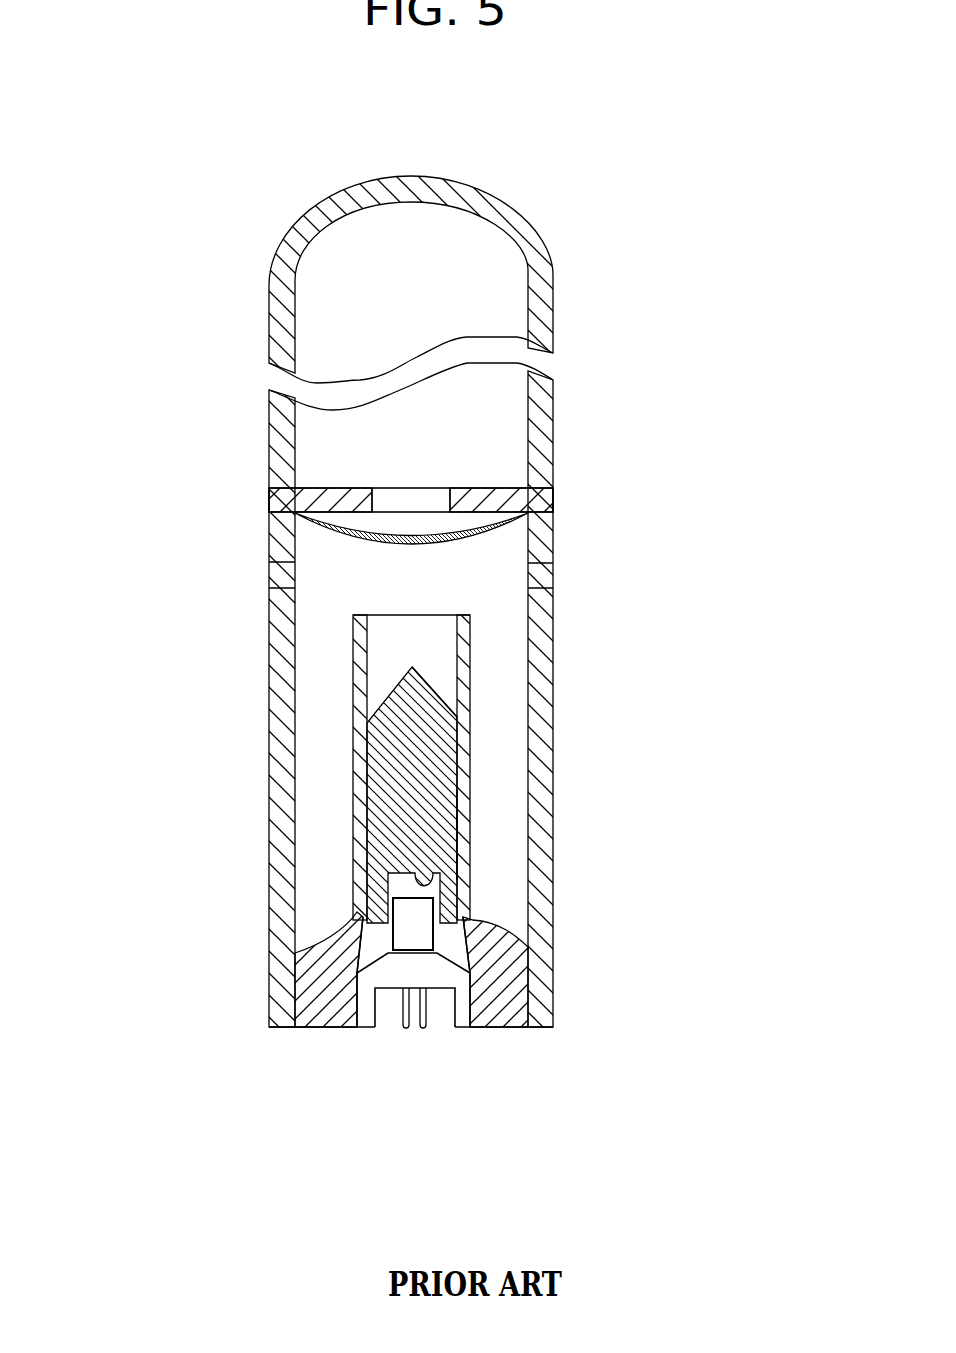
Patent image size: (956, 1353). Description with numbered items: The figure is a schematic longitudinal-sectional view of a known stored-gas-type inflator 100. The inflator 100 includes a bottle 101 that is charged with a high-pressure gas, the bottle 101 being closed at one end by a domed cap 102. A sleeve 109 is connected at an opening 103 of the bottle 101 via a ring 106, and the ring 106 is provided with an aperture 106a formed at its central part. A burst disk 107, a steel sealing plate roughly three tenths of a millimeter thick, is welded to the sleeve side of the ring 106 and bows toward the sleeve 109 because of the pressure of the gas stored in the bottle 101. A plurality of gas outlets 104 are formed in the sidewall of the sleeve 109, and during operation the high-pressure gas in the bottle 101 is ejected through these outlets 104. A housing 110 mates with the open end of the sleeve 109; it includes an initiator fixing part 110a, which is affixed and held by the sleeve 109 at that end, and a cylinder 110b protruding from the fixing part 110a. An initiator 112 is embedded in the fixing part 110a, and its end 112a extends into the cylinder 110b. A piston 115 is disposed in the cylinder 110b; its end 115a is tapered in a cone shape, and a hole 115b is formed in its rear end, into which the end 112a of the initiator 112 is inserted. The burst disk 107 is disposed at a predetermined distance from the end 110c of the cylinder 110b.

The inflator 100 is at (153, 439).
The bottle 101 is at (267, 437).
The cap 102 is at (318, 201).
The opening 103 is at (500, 461).
The gas outlets 104 is at (270, 575).
The ring 106 is at (360, 477).
The aperture 106a is at (383, 488).
The burst disk 107 is at (463, 540).
The sleeve 109 is at (270, 713).
The housing 110 is at (478, 788).
The initiator fixing part 110a is at (454, 974).
The cylinder 110b is at (465, 865).
The end of the cylinder 110c is at (358, 616).
The initiator 112 is at (358, 997).
The end of the initiator 112a is at (413, 925).
The piston 115 is at (391, 795).
The end of the piston 115a is at (437, 697).
The hole 115b is at (463, 835).